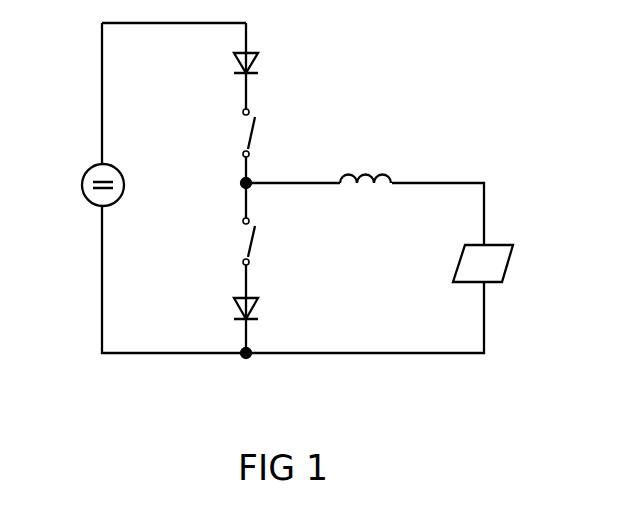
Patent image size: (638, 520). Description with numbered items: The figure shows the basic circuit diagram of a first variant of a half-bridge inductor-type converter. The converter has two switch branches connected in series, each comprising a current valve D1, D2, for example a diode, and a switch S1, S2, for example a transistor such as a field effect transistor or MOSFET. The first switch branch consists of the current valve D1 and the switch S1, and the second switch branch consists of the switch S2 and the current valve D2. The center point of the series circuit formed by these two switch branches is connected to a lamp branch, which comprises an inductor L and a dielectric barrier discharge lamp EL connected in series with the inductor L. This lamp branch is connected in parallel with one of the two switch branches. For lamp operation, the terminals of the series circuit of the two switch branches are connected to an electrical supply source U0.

The electrical supply source U0 is at (89, 168).
The current valve D1 is at (268, 66).
The switch S1 is at (266, 133).
The switch S2 is at (269, 241).
The current valve D2 is at (268, 311).
The inductor L is at (365, 162).
The dielectric barrier discharge lamp EL is at (501, 264).